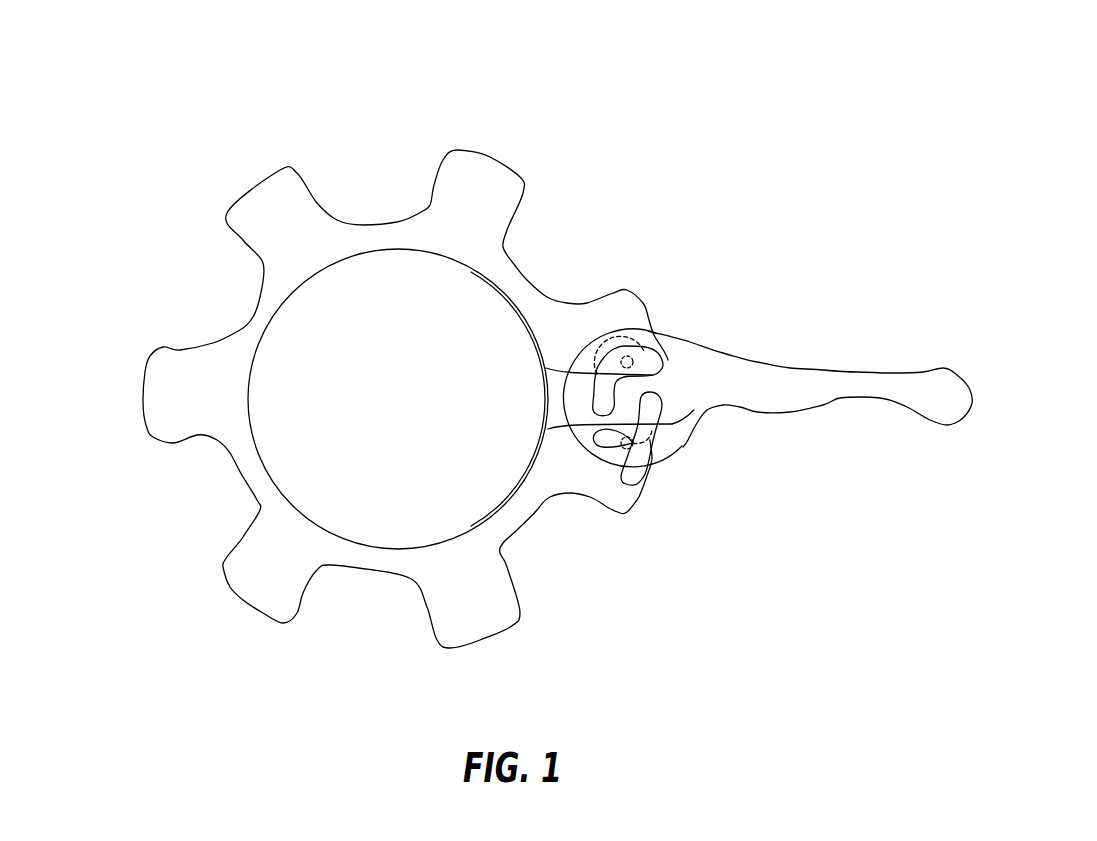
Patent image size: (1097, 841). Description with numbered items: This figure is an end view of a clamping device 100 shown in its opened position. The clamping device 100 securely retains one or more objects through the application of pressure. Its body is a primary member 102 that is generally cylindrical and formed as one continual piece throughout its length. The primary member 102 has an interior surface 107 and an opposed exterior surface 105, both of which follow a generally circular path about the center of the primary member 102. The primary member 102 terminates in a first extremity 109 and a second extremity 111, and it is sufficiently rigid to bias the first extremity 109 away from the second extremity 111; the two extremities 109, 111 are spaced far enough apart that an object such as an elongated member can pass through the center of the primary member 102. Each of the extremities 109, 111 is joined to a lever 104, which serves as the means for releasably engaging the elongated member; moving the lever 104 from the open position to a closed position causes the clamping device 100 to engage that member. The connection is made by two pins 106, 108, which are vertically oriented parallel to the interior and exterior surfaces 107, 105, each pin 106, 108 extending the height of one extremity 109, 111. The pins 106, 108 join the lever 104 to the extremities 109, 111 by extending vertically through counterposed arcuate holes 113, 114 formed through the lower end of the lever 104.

The clamping device 100 is at (165, 106).
The primary member 102 is at (290, 240).
The lever 104 is at (775, 382).
The exterior surface 105 is at (373, 570).
The pin 106 is at (633, 357).
The interior surface 107 is at (263, 332).
The pin 108 is at (637, 483).
The first extremity 109 is at (585, 322).
The second extremity 111 is at (587, 477).
The arcuate hole 113 is at (620, 358).
The arcuate hole 114 is at (702, 444).